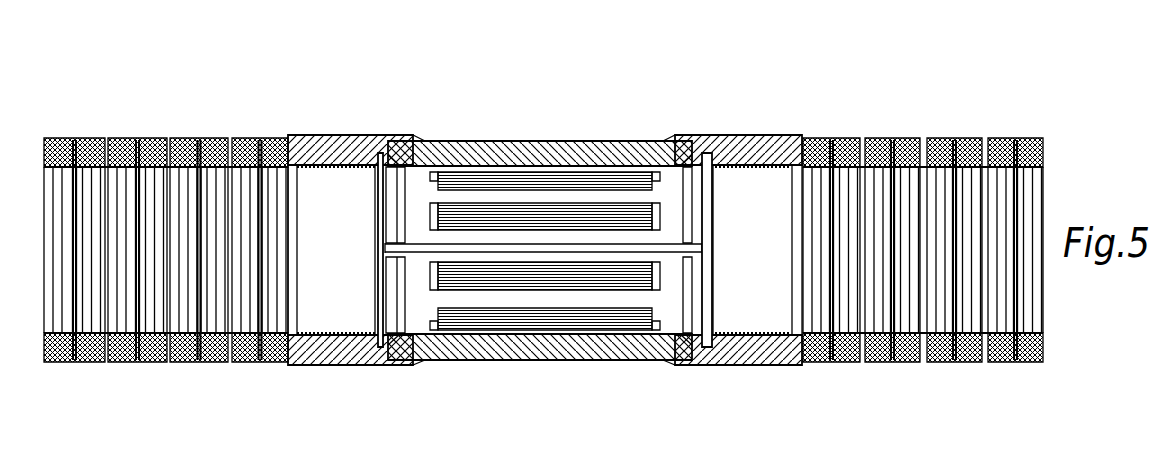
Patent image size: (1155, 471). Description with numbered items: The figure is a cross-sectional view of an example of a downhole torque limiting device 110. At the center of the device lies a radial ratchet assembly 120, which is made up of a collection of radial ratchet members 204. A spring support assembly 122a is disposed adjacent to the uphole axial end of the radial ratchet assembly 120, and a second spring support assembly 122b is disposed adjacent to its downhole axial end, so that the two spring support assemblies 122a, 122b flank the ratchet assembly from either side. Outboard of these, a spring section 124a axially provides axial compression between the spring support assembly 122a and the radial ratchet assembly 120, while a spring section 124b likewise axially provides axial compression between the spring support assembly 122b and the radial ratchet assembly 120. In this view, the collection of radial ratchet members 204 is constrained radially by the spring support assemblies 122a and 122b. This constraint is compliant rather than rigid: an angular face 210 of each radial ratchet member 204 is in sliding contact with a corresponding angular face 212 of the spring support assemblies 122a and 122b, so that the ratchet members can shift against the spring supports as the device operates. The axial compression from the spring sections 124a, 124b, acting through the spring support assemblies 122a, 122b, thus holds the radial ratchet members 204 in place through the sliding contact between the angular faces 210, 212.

The torque limiting device 110 is at (250, 87).
The radial ratchet assembly 120 is at (713, 435).
The spring support assembly 122a is at (325, 134).
The spring support assembly 122b is at (763, 134).
The spring section 124a is at (288, 122).
The spring section 124b is at (1043, 122).
The radial ratchet member 204 is at (530, 140).
The angular face 210 is at (427, 138).
The angular face 212 is at (390, 143).